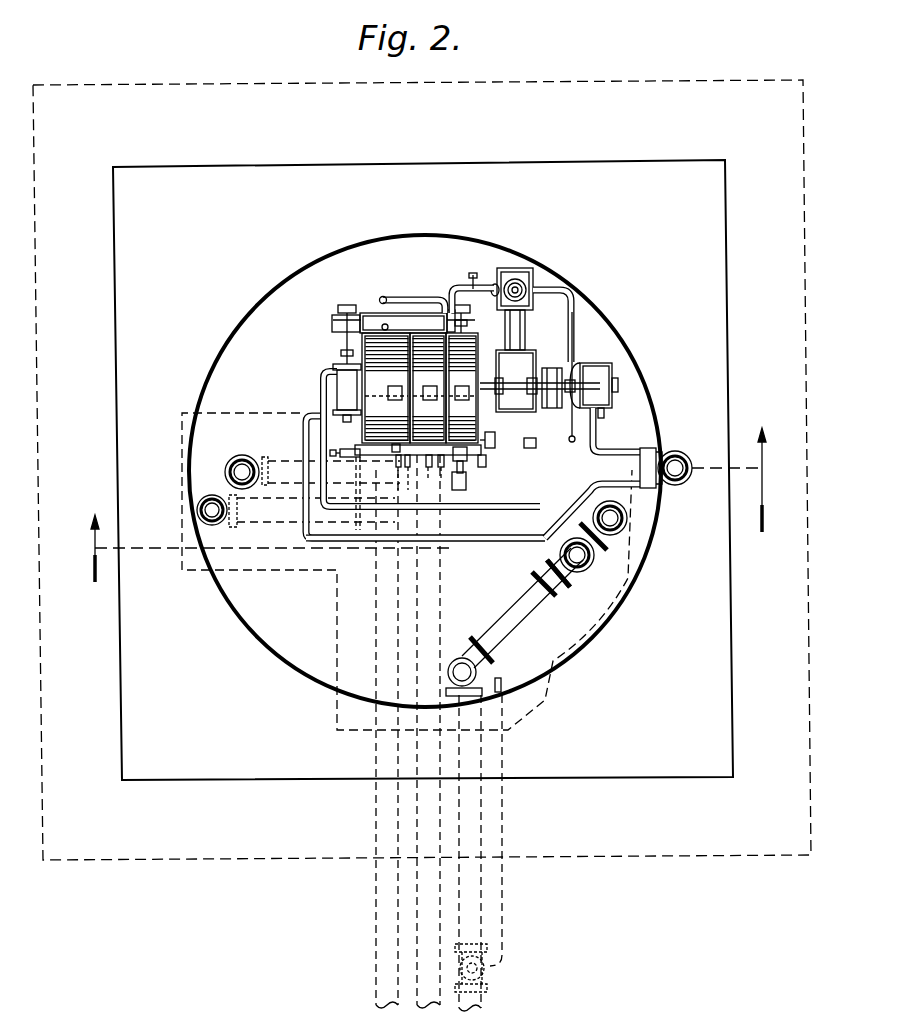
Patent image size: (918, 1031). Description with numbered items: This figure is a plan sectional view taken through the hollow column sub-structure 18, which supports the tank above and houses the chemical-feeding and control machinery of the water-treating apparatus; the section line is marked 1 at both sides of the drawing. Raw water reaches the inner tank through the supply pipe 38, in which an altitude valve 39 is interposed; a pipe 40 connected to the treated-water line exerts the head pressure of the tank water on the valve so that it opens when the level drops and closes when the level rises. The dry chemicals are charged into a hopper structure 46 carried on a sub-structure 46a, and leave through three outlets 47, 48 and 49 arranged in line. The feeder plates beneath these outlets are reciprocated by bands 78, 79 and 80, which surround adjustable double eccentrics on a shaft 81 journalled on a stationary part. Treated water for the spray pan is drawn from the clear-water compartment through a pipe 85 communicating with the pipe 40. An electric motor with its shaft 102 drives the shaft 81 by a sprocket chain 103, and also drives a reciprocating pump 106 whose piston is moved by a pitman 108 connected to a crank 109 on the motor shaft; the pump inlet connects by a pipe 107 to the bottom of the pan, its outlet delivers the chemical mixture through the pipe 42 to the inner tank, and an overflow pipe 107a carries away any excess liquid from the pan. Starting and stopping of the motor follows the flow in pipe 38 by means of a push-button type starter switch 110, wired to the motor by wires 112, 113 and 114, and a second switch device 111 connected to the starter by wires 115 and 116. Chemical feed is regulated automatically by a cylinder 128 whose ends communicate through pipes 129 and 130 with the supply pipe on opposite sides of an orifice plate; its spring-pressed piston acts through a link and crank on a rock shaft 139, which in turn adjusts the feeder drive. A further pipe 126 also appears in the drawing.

The section line 1- 1 is at (429, 505).
The sub-structure 18 is at (226, 340).
The raw water supply pipe 38 is at (620, 533).
The altitude valve 39 is at (490, 980).
The pipe 40 is at (523, 682).
The pipe 42 is at (495, 442).
The hopper structure 46 is at (347, 345).
The sub-structure 46a is at (392, 448).
The outlet 47 is at (393, 386).
The outlet 48 is at (425, 395).
The outlet 49 is at (462, 398).
The band 78 is at (397, 462).
The band 79 is at (431, 462).
The band 80 is at (466, 470).
The shaft 81 is at (383, 453).
The pipe 85 is at (400, 297).
The motor shaft 102 is at (547, 365).
The sprocket chain 103 is at (598, 380).
The pump 106 is at (520, 278).
The pipe 107 is at (437, 268).
The overflow pipe 107a is at (358, 262).
The pitman 108 is at (517, 340).
The crank 109 is at (570, 416).
The switch device 110 is at (655, 490).
The switch device 111 is at (555, 598).
The wire 112 is at (628, 446).
The wire 113 is at (600, 448).
The wire 114 is at (604, 410).
The wire 115 is at (571, 512).
The wire 116 is at (536, 445).
The pipe 126 is at (540, 539).
The cylinder 128 is at (342, 390).
The pipe 129 is at (335, 367).
The pipe 130 is at (306, 416).
The rock shaft 139 is at (380, 318).